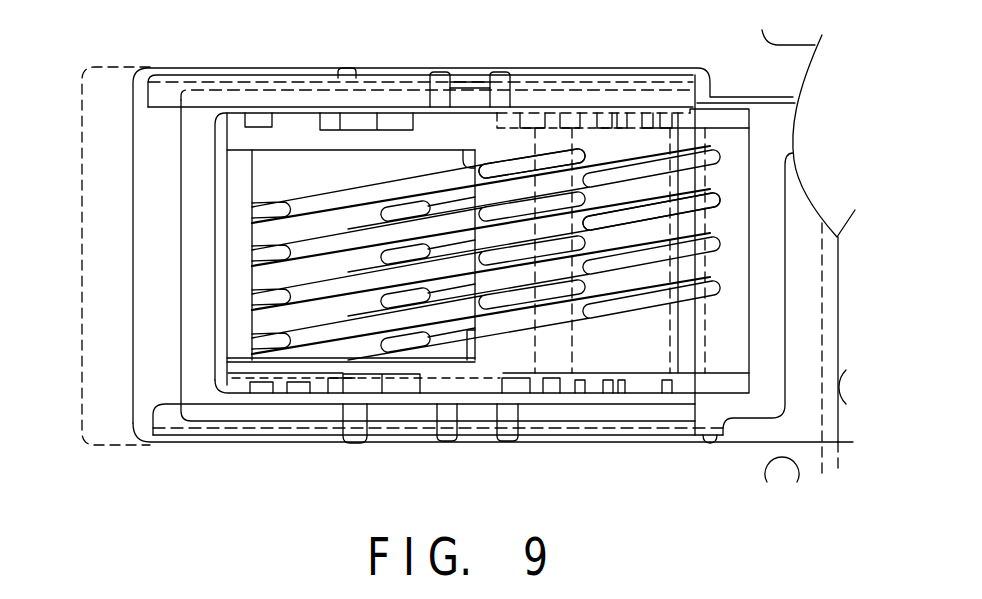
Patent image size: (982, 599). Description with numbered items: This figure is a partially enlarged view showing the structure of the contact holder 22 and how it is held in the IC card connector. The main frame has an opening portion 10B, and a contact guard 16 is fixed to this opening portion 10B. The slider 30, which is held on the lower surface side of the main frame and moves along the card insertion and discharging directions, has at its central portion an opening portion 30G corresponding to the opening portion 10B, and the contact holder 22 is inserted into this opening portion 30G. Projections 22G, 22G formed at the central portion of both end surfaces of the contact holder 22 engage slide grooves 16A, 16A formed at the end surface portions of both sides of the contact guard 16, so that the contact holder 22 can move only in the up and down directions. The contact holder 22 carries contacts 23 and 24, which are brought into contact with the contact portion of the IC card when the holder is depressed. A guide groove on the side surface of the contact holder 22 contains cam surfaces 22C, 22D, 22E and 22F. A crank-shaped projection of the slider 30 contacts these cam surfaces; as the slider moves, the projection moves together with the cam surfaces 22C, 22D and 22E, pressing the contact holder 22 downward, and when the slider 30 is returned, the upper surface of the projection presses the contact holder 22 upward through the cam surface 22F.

The opening portion 10B is at (137, 317).
The contact guard 16 is at (437, 100).
The slide grooves 16A is at (470, 90).
The contact holder 22 is at (740, 138).
The cam surface 22C is at (340, 383).
The cam surface 22D is at (367, 388).
The cam surface 22E is at (408, 388).
The cam surface 22F is at (288, 383).
The projections 22G is at (461, 88).
The contacts 23 is at (553, 177).
The contacts 24 is at (647, 210).
The slider 30 is at (813, 270).
The opening portion 30G is at (781, 317).